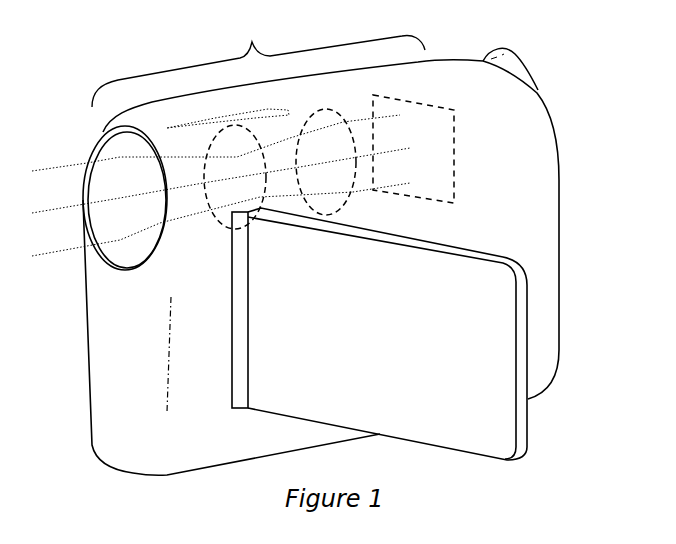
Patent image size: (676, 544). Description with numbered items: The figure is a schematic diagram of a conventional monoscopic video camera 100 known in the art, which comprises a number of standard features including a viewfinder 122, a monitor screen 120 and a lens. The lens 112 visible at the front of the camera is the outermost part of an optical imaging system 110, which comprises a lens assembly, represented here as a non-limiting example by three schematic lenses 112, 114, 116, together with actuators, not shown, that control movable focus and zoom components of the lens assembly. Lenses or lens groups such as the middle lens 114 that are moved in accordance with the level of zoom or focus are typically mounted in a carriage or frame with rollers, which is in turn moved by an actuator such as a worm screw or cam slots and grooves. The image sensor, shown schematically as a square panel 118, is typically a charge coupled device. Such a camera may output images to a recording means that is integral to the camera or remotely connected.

The video camera 100 is at (530, 167).
The optical imaging system 110 is at (258, 63).
The lens 112 is at (125, 198).
The middle lens 114 is at (235, 177).
The lens 116 is at (326, 162).
The image sensor 118 is at (413, 149).
The monitor screen 120 is at (479, 376).
The viewfinder 122 is at (541, 80).